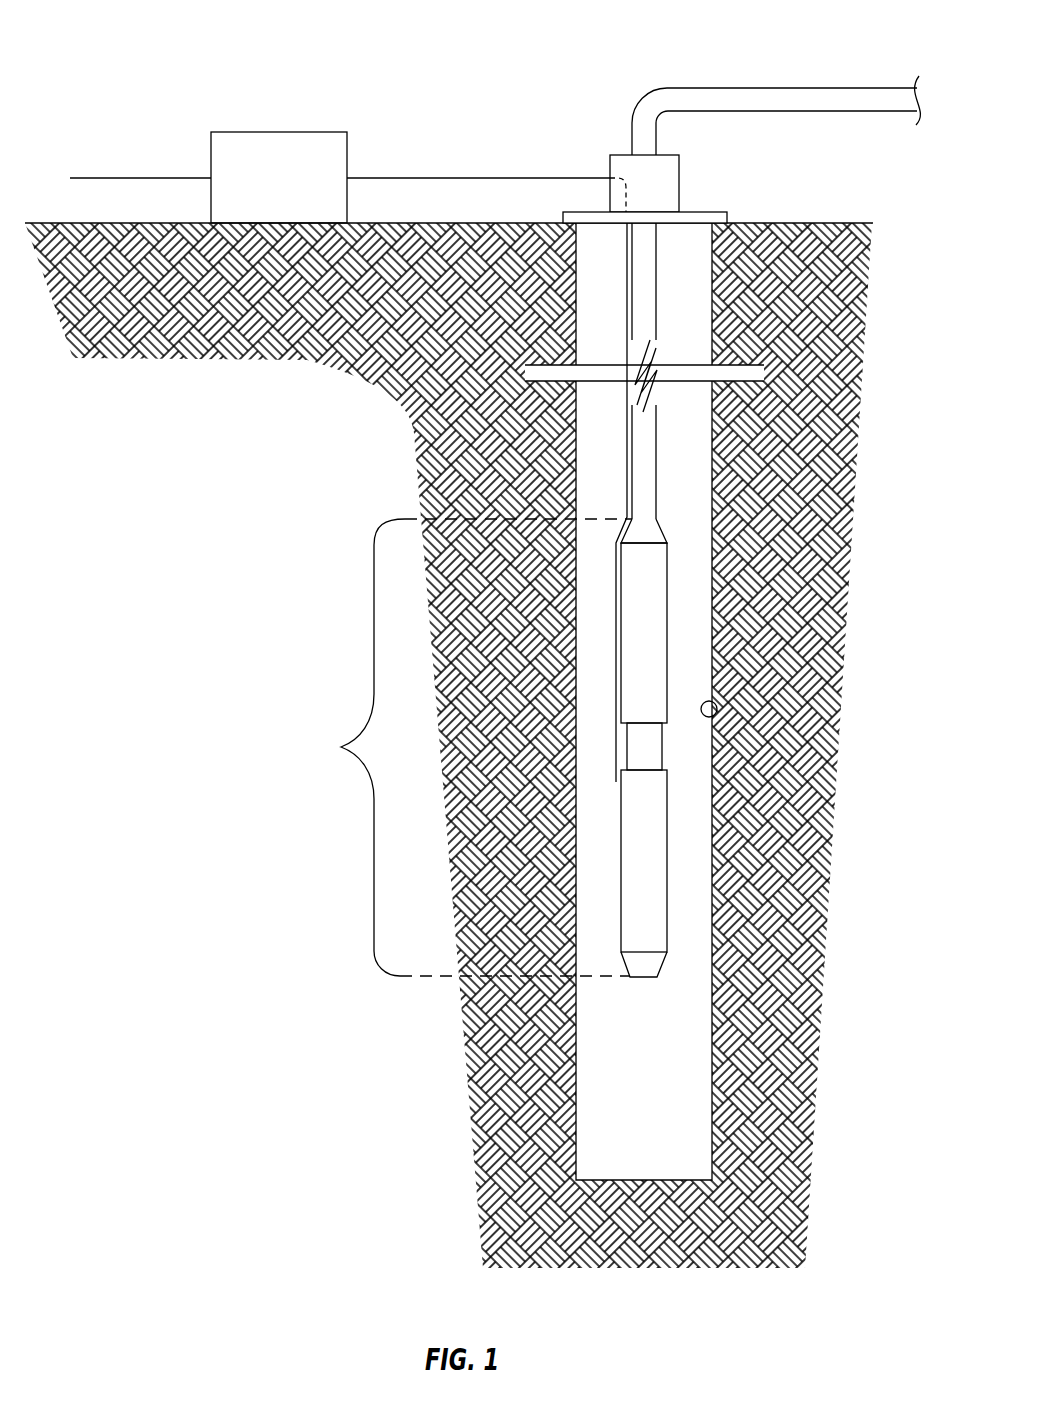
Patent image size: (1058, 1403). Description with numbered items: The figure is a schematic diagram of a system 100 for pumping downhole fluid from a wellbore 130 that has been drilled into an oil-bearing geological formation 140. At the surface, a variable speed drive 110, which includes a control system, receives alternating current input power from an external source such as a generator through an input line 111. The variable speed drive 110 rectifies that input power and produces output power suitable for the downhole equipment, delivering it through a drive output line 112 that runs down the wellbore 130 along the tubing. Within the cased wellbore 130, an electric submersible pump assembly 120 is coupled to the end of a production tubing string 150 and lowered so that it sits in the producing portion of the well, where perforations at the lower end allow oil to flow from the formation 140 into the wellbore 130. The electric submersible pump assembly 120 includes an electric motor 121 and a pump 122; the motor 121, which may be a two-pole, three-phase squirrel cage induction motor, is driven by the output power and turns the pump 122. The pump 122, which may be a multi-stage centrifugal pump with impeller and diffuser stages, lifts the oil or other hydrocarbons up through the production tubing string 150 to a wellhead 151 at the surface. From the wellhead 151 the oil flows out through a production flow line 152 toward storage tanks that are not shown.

The system 100 is at (150, 31).
The variable speed drive 110 is at (278, 133).
The input line 111 is at (105, 177).
The drive output line 112 is at (475, 177).
The electric submersible pump assembly 120 is at (341, 747).
The electric motor 121 is at (667, 865).
The pump 122 is at (667, 553).
The wellbore 130 is at (713, 718).
The oil-bearing geological formation 140 is at (783, 750).
The production tubing string 150 is at (657, 478).
The wellhead 151 is at (680, 182).
The production flow line 152 is at (804, 88).